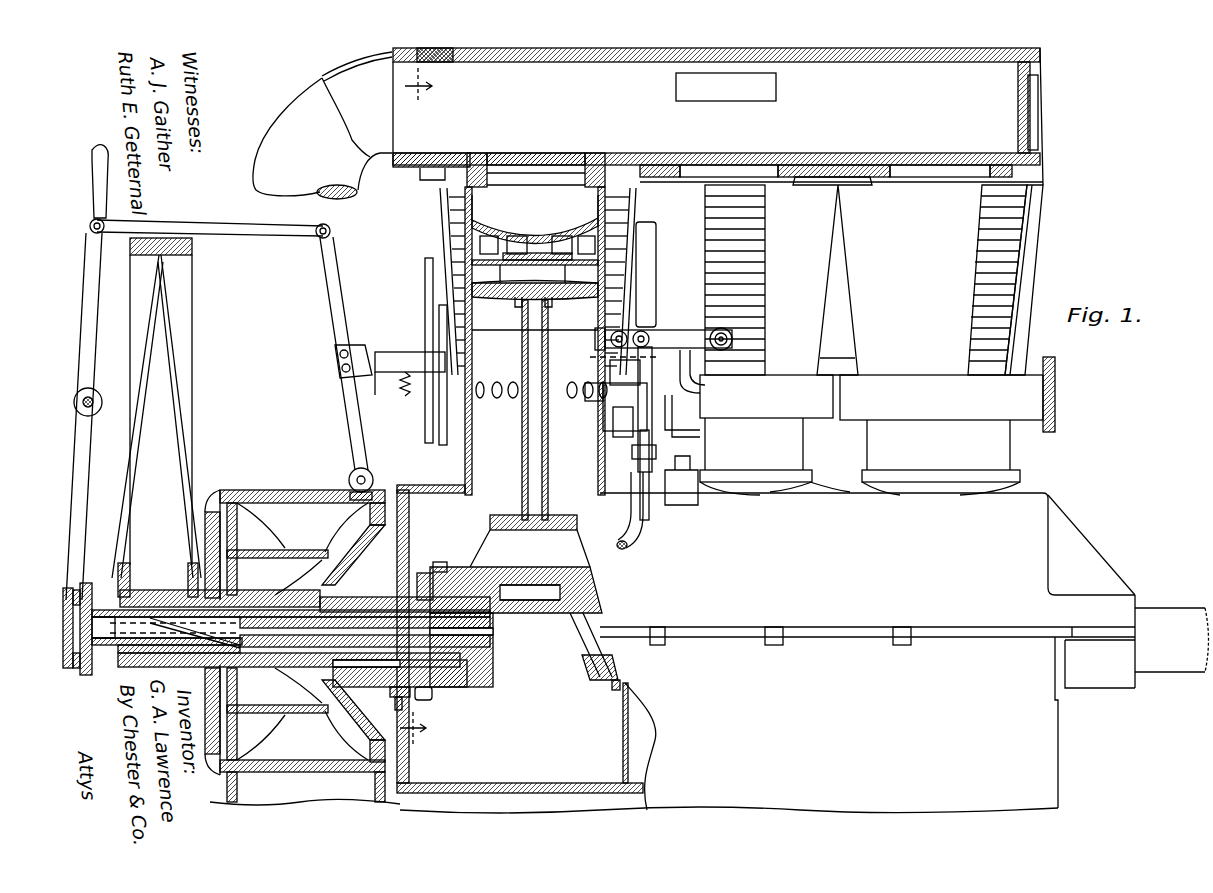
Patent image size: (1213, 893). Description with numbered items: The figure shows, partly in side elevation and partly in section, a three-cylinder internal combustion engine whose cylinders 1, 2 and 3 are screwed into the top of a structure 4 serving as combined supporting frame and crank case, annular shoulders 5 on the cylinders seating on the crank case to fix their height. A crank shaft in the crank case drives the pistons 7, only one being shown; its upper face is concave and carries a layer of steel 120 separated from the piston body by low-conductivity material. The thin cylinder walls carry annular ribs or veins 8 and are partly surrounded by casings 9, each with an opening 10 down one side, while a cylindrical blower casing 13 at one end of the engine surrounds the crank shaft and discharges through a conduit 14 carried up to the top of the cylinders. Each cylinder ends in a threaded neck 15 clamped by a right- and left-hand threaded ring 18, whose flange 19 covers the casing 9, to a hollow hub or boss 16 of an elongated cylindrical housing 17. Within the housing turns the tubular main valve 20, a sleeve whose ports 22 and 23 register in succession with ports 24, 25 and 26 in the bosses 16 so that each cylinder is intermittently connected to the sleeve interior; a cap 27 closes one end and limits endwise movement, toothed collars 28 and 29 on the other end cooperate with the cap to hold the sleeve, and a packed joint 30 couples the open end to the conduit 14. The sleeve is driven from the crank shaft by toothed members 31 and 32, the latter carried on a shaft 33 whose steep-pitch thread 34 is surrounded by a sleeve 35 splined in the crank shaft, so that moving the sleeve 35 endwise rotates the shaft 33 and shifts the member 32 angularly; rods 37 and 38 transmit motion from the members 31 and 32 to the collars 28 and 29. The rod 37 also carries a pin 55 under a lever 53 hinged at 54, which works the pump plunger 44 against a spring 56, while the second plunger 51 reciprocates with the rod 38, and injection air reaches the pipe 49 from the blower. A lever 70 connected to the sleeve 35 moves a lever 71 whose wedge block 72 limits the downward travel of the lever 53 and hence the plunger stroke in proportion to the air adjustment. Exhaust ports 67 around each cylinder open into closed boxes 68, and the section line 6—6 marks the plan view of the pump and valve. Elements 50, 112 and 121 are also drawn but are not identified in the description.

The cylinder 1 is at (533, 185).
The cylinder 2 is at (748, 185).
The cylinder 3 is at (1050, 200).
The combined supporting frame and crank case 4 is at (904, 613).
The annular shoulders 5 is at (465, 468).
The section line 6— 6 is at (578, 632).
The piston 7 is at (496, 328).
The annular ribs or veins 8 is at (452, 222).
The casing 9 is at (447, 195).
The opening 10 is at (1030, 268).
The blower or compressor casing 13 is at (235, 490).
The conduit 14 is at (290, 112).
The screw threaded external portion 15 is at (487, 185).
The hollow hubs or bosses 16 is at (593, 170).
The elongated cylindrical housing 17 is at (598, 62).
The internally screw threaded rings 18 is at (470, 165).
The flanges 19 is at (440, 185).
The tubular valve (main valve) 20 is at (830, 62).
The port 22 is at (722, 93).
The port 23 is at (946, 62).
The port 24 is at (566, 170).
The port 25 is at (722, 170).
The port 26 is at (920, 170).
The cap 27 is at (1040, 120).
The toothed collar or wheel 28 is at (438, 62).
The toothed collar or wheel 29 is at (456, 62).
The packed joint 30 is at (395, 48).
The toothed member 31 is at (424, 572).
The toothed member 32 is at (440, 562).
The shaft 33 is at (455, 672).
The thread 34 is at (175, 598).
The sleeve (actuating sleeve) 35 is at (112, 600).
The rod 37 is at (428, 430).
The rod 38 is at (447, 435).
The plunger 44 is at (640, 380).
The pipe 49 is at (595, 408).
The valve rod 50 is at (645, 298).
The plunger 51 is at (612, 372).
The lever 53 is at (684, 340).
The hinge 54 is at (758, 332).
The pin 55 is at (420, 362).
The spring 56 is at (403, 398).
The exhaust ports 67 is at (515, 398).
The closed boxes or casings 68 is at (892, 410).
The lever 70 is at (98, 322).
The lever 71 is at (344, 305).
The wedge block 72 is at (360, 345).
The pipe 112 is at (650, 535).
The layer of steel 120 is at (498, 233).
The piston ring 121 is at (536, 235).